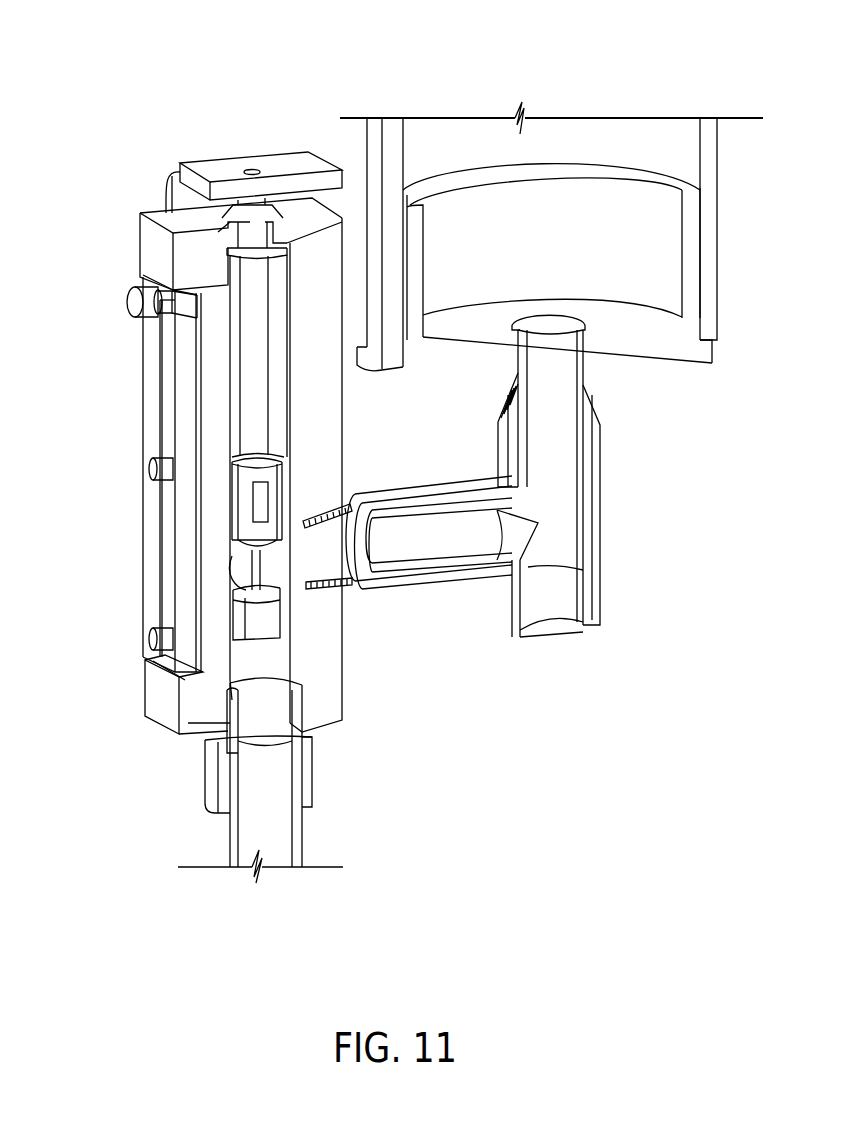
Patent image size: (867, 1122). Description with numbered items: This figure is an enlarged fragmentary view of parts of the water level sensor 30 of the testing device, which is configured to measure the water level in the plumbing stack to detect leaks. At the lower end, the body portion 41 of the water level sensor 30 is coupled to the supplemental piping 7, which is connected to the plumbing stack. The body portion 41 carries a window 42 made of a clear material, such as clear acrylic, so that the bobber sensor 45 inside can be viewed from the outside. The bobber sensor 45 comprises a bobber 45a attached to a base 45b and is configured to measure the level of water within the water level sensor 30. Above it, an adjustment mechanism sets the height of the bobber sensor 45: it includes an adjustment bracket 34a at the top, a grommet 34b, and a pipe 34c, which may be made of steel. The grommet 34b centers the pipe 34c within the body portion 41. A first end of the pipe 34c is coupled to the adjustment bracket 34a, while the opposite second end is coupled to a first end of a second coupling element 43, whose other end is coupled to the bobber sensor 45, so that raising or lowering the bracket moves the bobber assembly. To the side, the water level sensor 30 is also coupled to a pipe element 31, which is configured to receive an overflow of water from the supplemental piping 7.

The water level sensor 30 is at (236, 84).
The pipe element 31 is at (663, 264).
The adjustment bracket 34a is at (177, 175).
The grommet 34b is at (240, 232).
The pipe 34c is at (235, 277).
The body portion 41 is at (145, 705).
The window 42 is at (145, 529).
The second coupling element 43 is at (232, 500).
The bobber sensor 45 is at (289, 587).
The bobber 45a is at (248, 622).
The base 45b is at (252, 556).
The supplemental piping 7 is at (228, 850).